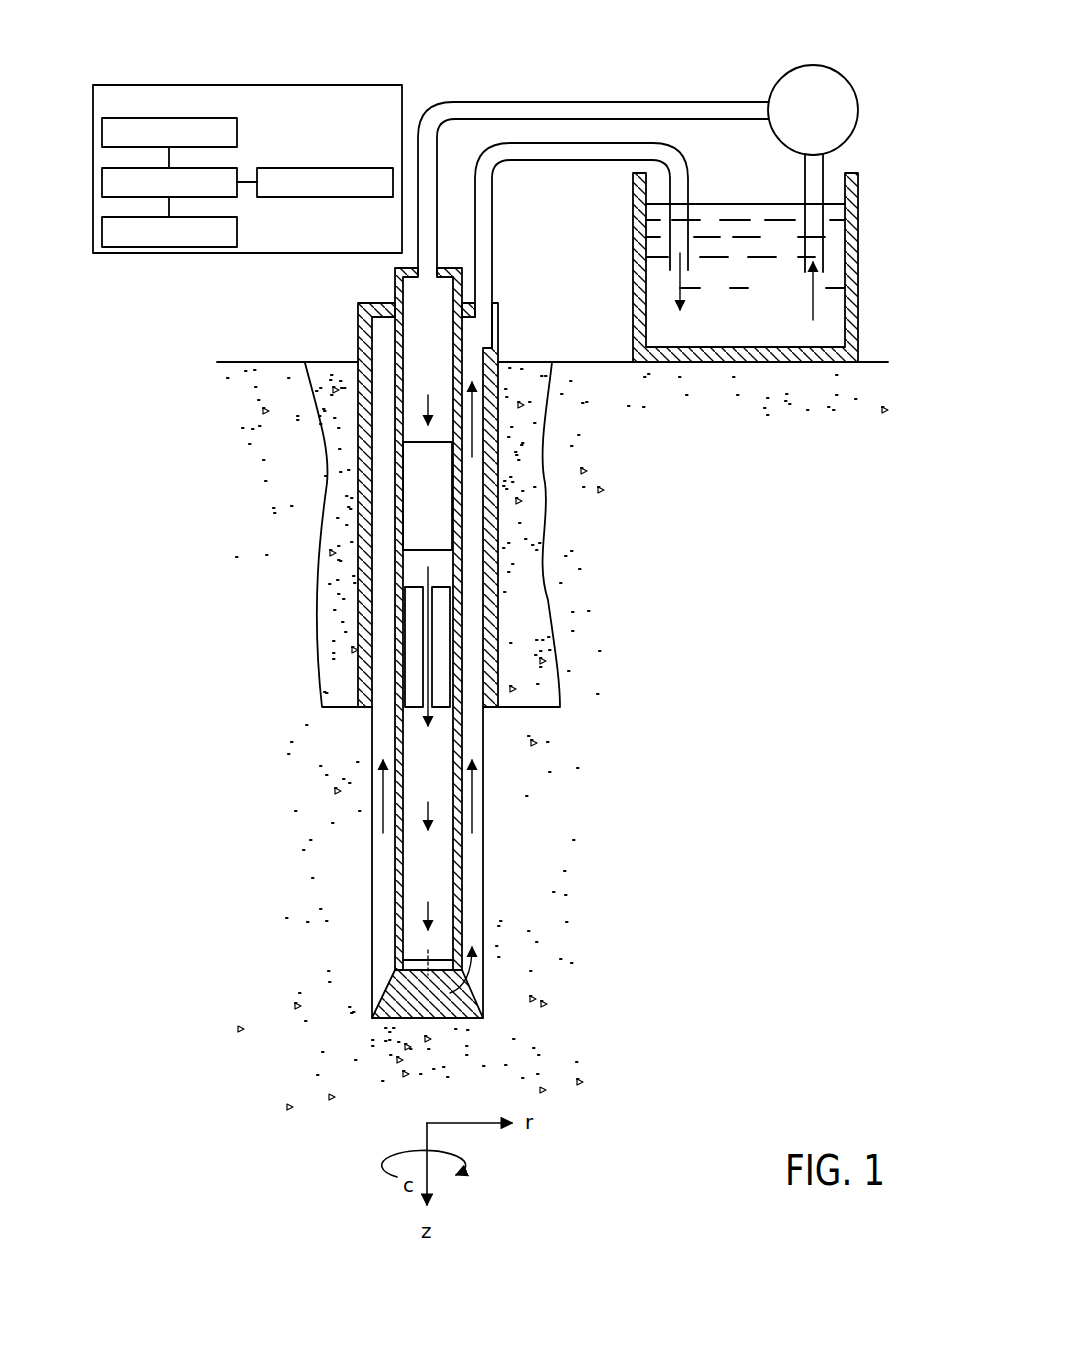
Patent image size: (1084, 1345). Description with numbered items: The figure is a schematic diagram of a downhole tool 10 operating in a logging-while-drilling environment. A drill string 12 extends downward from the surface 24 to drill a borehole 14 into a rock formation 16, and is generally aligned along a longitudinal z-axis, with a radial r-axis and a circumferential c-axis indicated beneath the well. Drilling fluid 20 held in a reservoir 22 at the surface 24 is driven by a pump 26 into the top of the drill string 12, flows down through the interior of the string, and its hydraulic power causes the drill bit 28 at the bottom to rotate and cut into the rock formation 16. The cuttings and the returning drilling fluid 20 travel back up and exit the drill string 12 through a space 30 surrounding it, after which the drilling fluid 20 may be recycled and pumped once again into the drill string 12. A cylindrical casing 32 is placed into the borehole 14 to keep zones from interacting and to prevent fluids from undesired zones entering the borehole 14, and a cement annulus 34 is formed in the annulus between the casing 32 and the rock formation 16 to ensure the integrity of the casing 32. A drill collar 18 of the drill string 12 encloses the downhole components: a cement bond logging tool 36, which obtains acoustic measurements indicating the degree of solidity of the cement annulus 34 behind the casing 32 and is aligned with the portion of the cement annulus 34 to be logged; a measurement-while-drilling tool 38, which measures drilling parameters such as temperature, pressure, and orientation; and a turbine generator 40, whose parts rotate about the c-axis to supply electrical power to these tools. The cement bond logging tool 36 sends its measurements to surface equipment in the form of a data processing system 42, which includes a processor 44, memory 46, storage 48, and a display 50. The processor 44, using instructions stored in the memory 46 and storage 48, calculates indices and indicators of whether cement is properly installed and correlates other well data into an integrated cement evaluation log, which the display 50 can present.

The downhole tool 10 is at (250, 46).
The drill string 12 is at (389, 281).
The borehole 14 is at (518, 341).
The rock formation 16 is at (645, 527).
The drill collar 18 is at (462, 583).
The drilling fluid 20 is at (772, 329).
The reservoir 22 is at (642, 263).
The surface 24 is at (905, 307).
The pump 26 is at (840, 108).
The drill bit 28 is at (398, 1000).
The space 30 is at (480, 902).
The casing 32 is at (490, 712).
The cement annulus 34 is at (348, 394).
The cement bond logging tool 36 is at (465, 683).
The measurement-while-drilling tool 38 is at (410, 718).
The turbine generator 40 is at (430, 492).
The data processing system 42 is at (247, 147).
The processor 44 is at (237, 190).
The memory 46 is at (240, 131).
The storage 48 is at (237, 233).
The display 50 is at (327, 168).